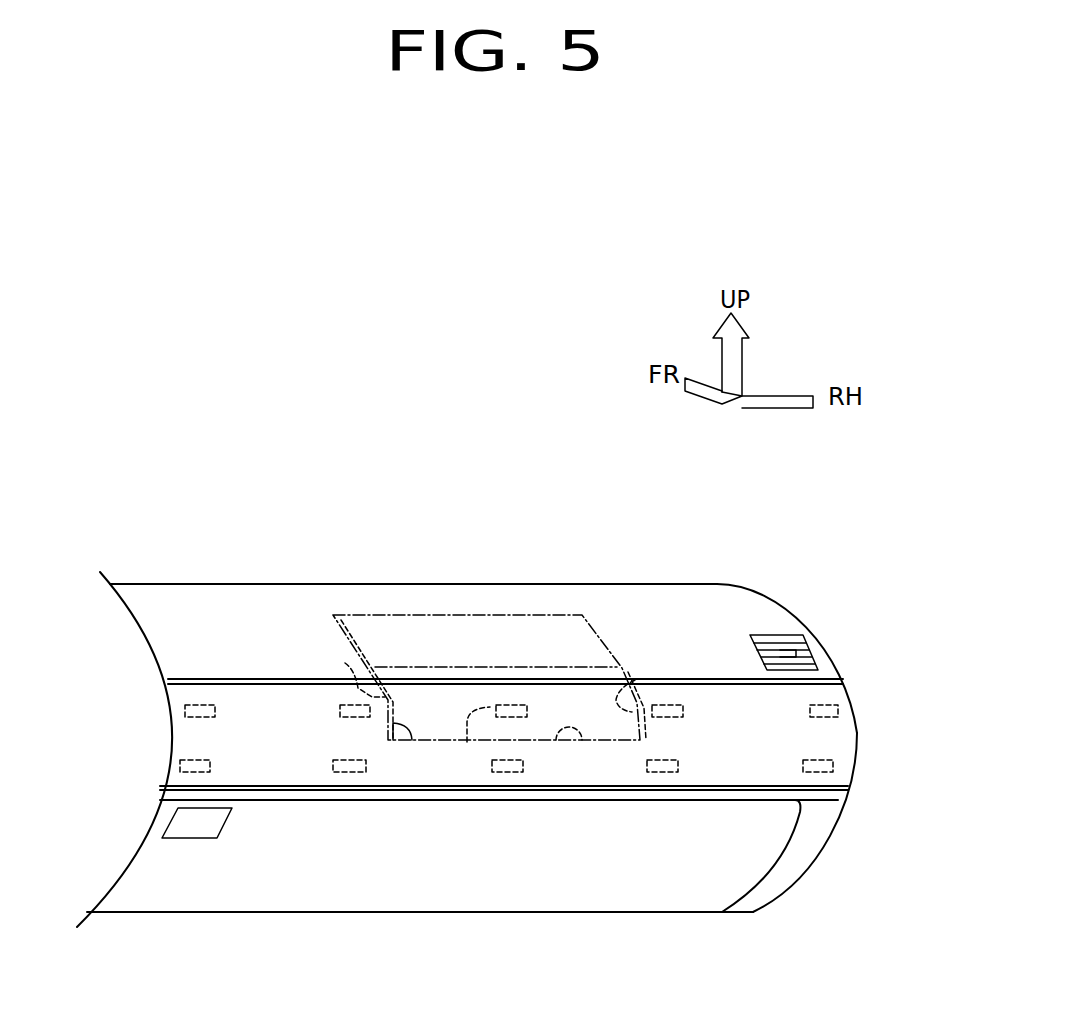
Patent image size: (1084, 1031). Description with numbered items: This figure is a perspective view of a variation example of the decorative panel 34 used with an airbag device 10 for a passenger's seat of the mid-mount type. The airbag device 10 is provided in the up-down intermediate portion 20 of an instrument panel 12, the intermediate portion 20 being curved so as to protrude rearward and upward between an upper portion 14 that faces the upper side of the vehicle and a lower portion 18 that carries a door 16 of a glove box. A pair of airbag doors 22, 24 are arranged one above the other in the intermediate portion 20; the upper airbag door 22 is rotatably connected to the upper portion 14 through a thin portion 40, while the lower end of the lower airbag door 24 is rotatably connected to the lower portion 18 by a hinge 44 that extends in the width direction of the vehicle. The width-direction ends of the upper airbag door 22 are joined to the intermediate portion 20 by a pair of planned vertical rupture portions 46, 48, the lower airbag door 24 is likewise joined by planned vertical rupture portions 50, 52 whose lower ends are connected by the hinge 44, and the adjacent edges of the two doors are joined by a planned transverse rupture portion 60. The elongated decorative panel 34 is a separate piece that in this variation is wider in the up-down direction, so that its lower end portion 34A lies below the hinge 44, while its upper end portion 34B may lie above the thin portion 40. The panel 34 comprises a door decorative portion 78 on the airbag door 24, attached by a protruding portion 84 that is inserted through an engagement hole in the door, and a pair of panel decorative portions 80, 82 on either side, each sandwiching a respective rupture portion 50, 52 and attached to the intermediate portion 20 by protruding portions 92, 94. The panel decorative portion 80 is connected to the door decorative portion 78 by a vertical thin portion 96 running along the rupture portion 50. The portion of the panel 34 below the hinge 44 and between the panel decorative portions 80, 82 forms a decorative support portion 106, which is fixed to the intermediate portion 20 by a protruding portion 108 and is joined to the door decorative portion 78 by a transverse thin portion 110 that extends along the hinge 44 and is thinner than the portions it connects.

The airbag device for a passenger's seat 10 is at (425, 528).
The instrument panel 12 is at (280, 584).
The upper portion 14 is at (473, 597).
The door of a glove box 16 is at (640, 892).
The lower portion 18 is at (790, 860).
The up-down intermediate portion 20 is at (628, 637).
The airbag door 22 is at (555, 620).
The airbag door 24 is at (455, 677).
The decorative panel 34 is at (873, 741).
The lower end portion 34A is at (175, 792).
The upper end portion 34B is at (193, 679).
The thin portion 40 is at (413, 615).
The hinge 44 is at (557, 740).
The planned vertical rupture portion 46 is at (597, 614).
The planned vertical rupture portion 48 is at (350, 633).
The planned vertical rupture portion 50 is at (635, 680).
The planned vertical rupture portion 52 is at (345, 663).
The planned transverse rupture portion 60 is at (414, 665).
The door decorative portion 78 is at (572, 697).
The panel decorative portion 80 is at (762, 768).
The panel decorative portion 82 is at (248, 777).
The protruding portion 84 is at (467, 742).
The protruding portion 92 is at (390, 815).
The protruding portion 94 is at (333, 762).
The vertical thin portion 96 is at (640, 716).
The decorative support portion 106 is at (528, 771).
The protruding portion 108 is at (508, 775).
The transverse thin portion 110 is at (580, 727).